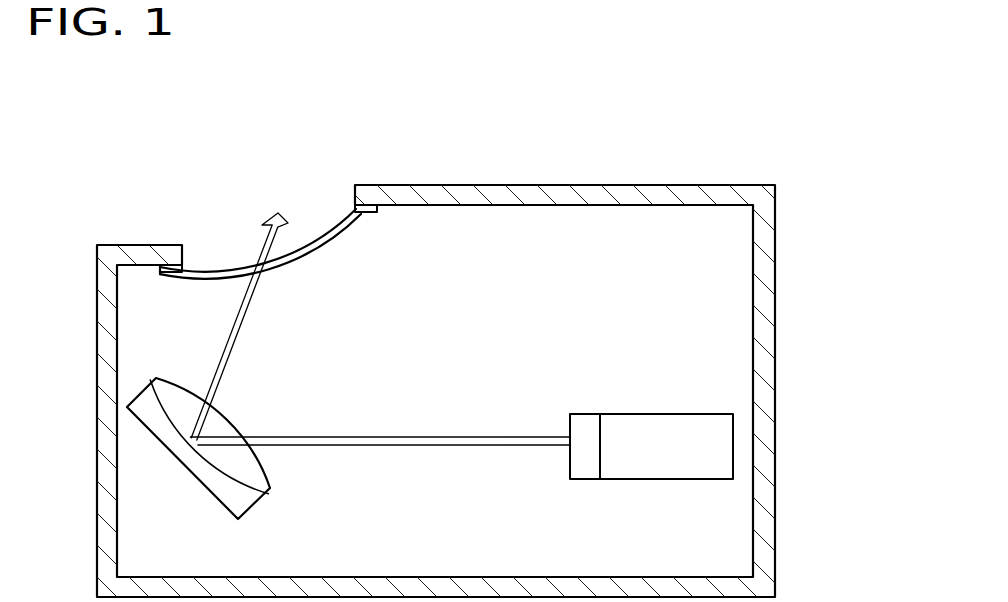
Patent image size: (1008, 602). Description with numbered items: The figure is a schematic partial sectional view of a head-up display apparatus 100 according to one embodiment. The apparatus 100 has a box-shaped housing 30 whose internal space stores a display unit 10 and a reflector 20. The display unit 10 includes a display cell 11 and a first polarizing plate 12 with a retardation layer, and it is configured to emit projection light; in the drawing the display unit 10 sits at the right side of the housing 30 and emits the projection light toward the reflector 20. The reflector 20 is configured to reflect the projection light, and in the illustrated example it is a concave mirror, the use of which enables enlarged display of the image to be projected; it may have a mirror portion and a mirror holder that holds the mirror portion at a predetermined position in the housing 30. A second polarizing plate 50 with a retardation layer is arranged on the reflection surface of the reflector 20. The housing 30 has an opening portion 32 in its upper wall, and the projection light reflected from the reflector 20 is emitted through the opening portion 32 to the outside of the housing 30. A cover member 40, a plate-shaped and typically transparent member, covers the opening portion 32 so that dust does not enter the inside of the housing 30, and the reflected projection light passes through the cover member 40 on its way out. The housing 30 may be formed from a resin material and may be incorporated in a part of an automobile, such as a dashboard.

The head-up display apparatus 100 is at (688, 132).
The housing 30 is at (465, 192).
The opening portion 32 is at (323, 210).
The cover member 40 is at (222, 270).
The reflector 20 is at (157, 422).
The second polarizing plate 50 is at (270, 488).
The display unit 10 is at (843, 435).
The display cell 11 is at (712, 447).
The first polarizing plate 12 is at (580, 473).